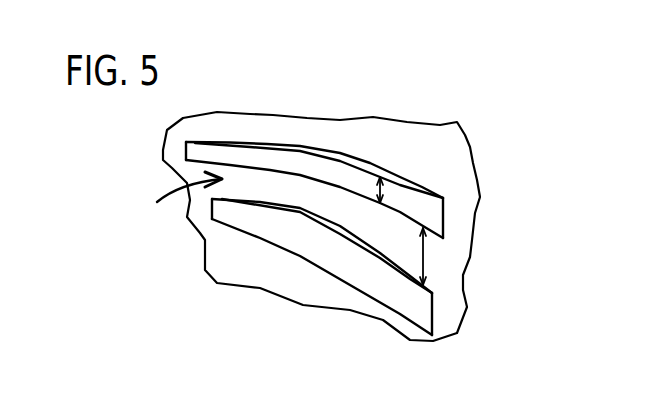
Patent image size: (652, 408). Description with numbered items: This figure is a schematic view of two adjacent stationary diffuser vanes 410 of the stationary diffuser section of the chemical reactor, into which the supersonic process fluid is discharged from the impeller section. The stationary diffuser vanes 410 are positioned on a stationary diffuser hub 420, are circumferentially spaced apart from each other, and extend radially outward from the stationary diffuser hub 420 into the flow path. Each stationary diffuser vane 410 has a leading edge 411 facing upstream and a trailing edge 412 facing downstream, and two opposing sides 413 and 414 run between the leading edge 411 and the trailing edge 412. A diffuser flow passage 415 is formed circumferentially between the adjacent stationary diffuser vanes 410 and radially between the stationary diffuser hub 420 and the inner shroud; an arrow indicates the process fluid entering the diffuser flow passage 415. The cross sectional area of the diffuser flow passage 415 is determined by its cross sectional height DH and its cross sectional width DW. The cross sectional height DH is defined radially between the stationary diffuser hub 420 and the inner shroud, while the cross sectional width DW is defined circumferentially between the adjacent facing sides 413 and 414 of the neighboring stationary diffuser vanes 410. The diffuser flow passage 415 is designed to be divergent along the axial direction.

The stationary diffuser vane 410 is at (319, 212).
The leading edge 411 is at (188, 146).
The trailing edge 412 is at (445, 217).
The side of stationary diffuser vane 413 is at (343, 152).
The side of stationary diffuser vane 414 is at (257, 157).
The diffuser flow passage 415 is at (171, 197).
The stationary diffuser hub 420 is at (313, 213).
The cross sectional height DH is at (382, 193).
The cross sectional width DW is at (422, 258).